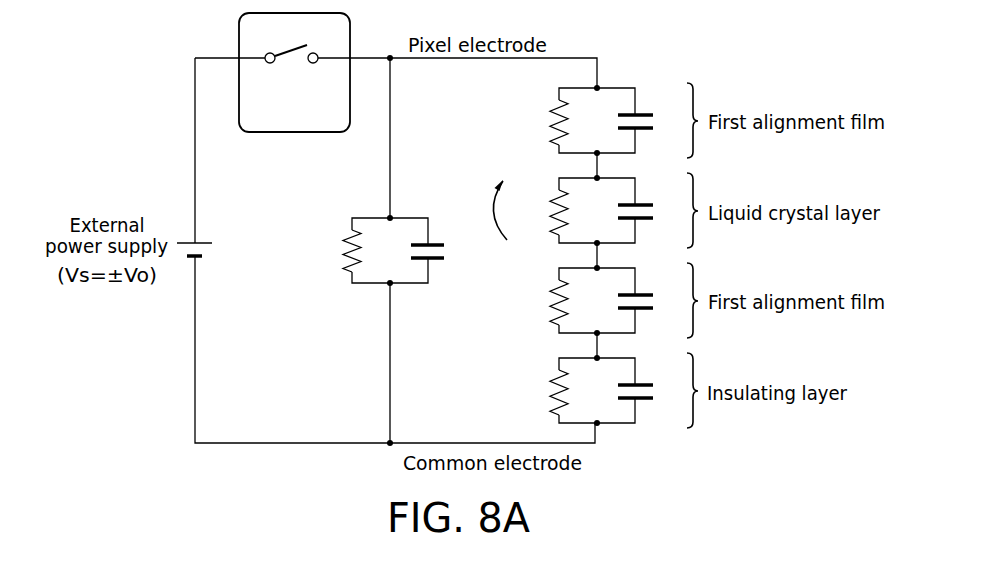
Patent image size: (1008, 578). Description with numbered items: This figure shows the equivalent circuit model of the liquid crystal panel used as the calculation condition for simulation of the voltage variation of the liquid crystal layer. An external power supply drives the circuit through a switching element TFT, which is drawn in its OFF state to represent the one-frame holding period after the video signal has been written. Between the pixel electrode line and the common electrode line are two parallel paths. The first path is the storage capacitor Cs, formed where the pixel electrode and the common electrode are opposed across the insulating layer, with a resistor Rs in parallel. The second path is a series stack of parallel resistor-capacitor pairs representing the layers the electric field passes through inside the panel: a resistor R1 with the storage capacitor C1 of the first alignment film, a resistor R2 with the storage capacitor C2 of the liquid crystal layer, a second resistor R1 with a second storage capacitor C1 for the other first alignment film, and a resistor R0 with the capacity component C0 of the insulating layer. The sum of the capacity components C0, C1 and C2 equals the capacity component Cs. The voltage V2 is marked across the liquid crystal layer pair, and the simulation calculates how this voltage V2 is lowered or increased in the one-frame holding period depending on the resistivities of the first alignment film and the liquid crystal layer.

The element TFT is at (294, 72).
The resistor Rs is at (338, 251).
The storage capacitor Cs is at (442, 253).
The voltage V2 is at (485, 207).
The resistor R1 is at (544, 212).
The storage capacitor C1 is at (650, 213).
The resistor R2 is at (544, 212).
The storage capacitor C2 is at (650, 213).
The resistor R0 is at (544, 392).
The capacity component C0 is at (650, 393).